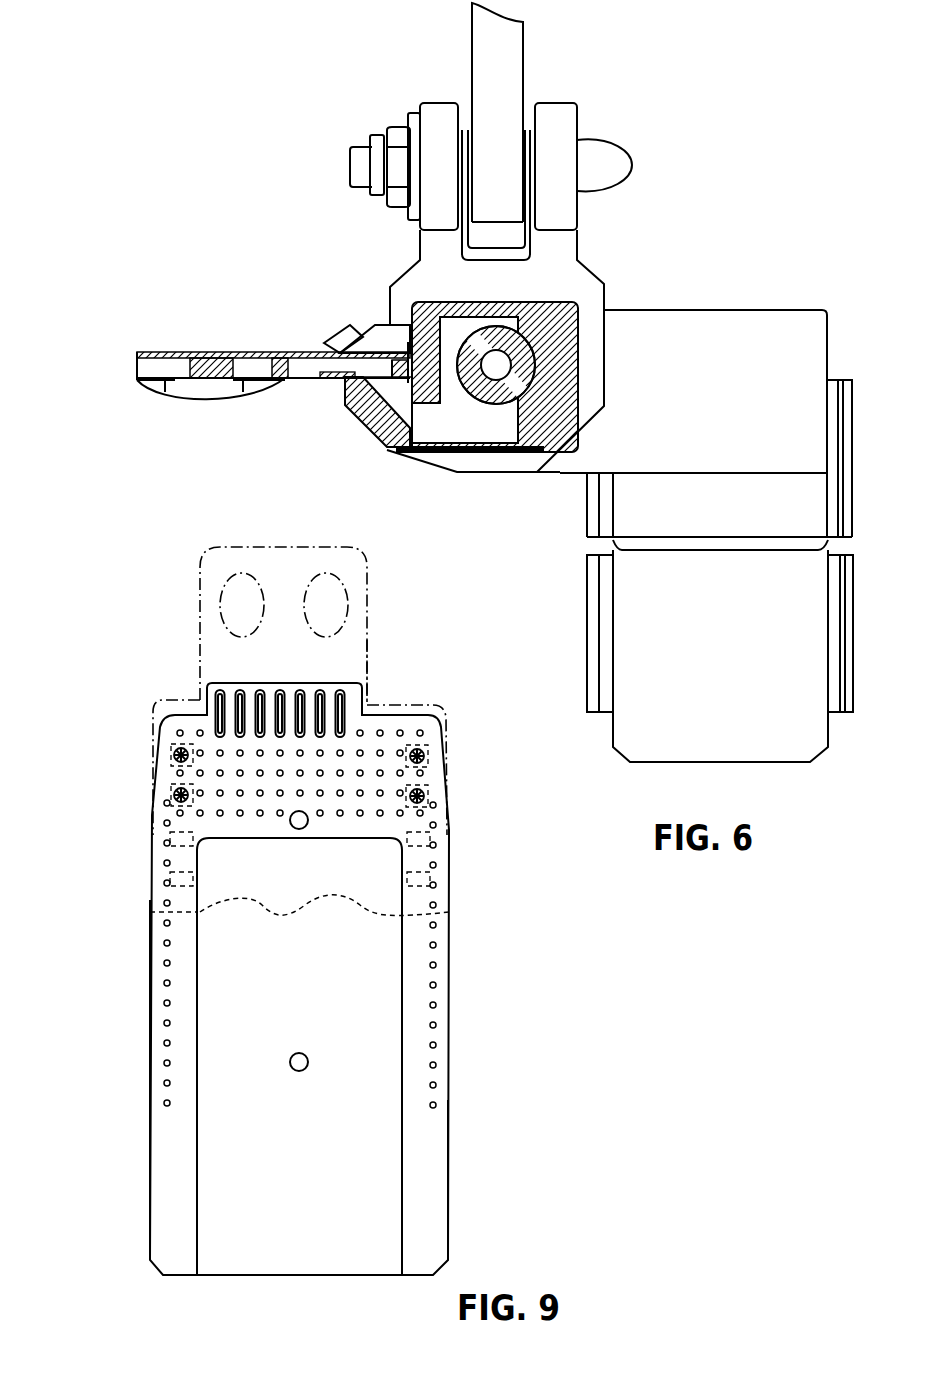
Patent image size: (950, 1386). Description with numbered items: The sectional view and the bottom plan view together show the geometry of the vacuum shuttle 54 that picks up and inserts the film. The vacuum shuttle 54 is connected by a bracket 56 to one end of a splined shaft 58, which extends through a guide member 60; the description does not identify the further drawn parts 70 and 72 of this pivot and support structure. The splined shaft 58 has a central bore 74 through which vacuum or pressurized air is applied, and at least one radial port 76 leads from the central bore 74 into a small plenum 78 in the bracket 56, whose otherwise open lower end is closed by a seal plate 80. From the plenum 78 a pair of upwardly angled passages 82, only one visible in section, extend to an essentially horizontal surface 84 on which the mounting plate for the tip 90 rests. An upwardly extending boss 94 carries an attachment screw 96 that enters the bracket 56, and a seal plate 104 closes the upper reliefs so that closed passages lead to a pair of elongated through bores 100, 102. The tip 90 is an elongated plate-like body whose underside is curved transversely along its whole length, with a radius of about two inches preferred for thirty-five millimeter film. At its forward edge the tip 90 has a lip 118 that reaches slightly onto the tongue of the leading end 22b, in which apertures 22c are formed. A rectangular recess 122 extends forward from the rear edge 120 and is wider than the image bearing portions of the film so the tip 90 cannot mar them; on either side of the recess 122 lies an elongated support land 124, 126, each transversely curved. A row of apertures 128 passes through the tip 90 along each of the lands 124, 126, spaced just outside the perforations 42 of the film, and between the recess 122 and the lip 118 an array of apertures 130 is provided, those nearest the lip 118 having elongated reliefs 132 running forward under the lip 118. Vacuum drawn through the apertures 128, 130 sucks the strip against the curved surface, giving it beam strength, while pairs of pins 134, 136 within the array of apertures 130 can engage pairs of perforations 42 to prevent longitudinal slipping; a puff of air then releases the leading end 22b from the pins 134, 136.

In FIG. 6, the vacuum shuttle 54 is at (116, 351).
In FIG. 6, the bracket 56 is at (578, 303).
In FIG. 6, the splined shaft 58 is at (497, 370).
In FIG. 6, the guide member 60 is at (722, 318).
In FIG. 6, the clevis pivot bracket 70 is at (565, 208).
In FIG. 6, the support arm 72 is at (512, 58).
In FIG. 6, the central bore 74 is at (477, 390).
In FIG. 6, the radial port 76 is at (462, 443).
In FIG. 6, the plenum 78 is at (437, 428).
In FIG. 6, the seal plate 80 is at (485, 450).
In FIG. 6, the upwardly angled passages 82 is at (353, 427).
In FIG. 6, the horizontal surface 84 is at (350, 393).
In FIG. 6, the tip 90 is at (188, 388).
In FIG. 9, the tip 90 is at (450, 1188).
In FIG. 6, the boss 94 is at (380, 333).
In FIG. 6, the attachment screw 96 is at (340, 337).
In FIG. 6, the elongated through bore 100 is at (158, 366).
In FIG. 6, the elongated through bore 102 is at (260, 365).
In FIG. 6, the seal plate 104 is at (173, 352).
In FIG. 9, the lip 118 is at (210, 683).
In FIG. 9, the rear edge 120 is at (355, 1280).
In FIG. 9, the rectangular recess 122 is at (308, 1158).
In FIG. 6, the support land 124 is at (150, 393).
In FIG. 9, the support land 124 is at (165, 1142).
In FIG. 6, the support land 126 is at (262, 397).
In FIG. 9, the support land 126 is at (438, 1157).
In FIG. 9, the row of apertures 128 is at (163, 983).
In FIG. 9, the array of apertures 130 is at (362, 733).
In FIG. 9, the elongated reliefs 132 is at (242, 687).
In FIG. 9, the pins 134 is at (174, 795).
In FIG. 9, the pins 136 is at (424, 795).
In FIG. 9, the leading end 22b is at (370, 663).
In FIG. 9, the apertures 22c is at (310, 623).
In FIG. 9, the perforations 42 is at (440, 705).